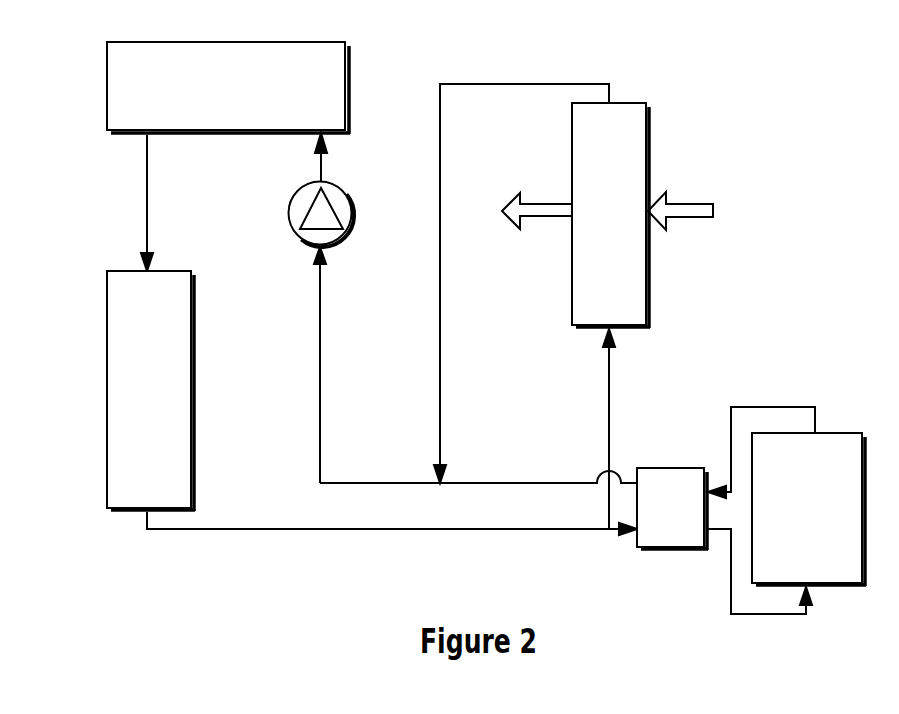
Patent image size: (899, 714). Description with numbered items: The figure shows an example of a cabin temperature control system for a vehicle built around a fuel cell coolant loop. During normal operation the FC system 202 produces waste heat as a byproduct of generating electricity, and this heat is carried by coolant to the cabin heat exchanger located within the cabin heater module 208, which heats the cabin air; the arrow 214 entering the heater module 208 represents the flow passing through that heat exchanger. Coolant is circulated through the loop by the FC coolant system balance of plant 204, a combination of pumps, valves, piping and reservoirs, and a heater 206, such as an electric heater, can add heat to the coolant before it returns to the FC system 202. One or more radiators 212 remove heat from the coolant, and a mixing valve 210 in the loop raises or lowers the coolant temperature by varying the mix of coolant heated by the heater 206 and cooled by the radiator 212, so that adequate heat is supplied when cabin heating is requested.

The FC system 202 is at (213, 95).
The FC coolant system balance of plant 204 is at (135, 399).
The heater 206 is at (349, 192).
The cabin heater module 208 is at (594, 223).
The mixing valve 210 is at (654, 519).
The radiator 212 is at (792, 519).
The input flow 214 is at (697, 192).